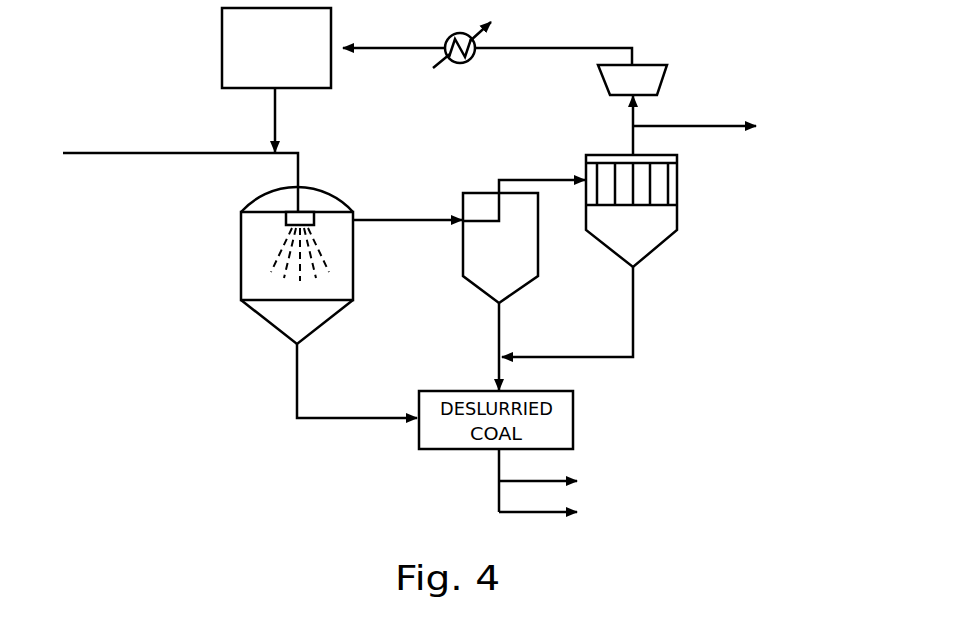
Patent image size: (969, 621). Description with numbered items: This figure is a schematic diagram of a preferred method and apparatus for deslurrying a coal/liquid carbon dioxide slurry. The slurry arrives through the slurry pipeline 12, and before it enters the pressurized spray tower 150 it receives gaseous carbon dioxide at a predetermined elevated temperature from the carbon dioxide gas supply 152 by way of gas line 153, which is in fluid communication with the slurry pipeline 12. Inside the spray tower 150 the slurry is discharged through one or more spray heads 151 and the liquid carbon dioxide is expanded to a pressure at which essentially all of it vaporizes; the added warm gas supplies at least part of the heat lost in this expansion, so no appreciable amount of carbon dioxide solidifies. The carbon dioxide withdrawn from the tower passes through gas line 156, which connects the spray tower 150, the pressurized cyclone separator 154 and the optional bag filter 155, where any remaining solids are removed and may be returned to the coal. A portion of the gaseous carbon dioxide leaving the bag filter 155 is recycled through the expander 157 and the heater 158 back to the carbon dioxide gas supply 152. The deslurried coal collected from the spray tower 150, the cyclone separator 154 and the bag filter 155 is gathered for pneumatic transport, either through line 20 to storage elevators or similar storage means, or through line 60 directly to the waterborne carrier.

The slurry pipeline 12 is at (153, 157).
The line 20 is at (540, 480).
The line 60 is at (540, 513).
The pressurized spray tower 150 is at (252, 275).
The spray heads 151 is at (286, 220).
The carbon dioxide gas supply 152 is at (228, 18).
The gas line 153 is at (276, 114).
The cyclone separator 154 is at (492, 275).
The bag filter 155 is at (647, 238).
The gas line 156 is at (409, 216).
The expander 157 is at (637, 78).
The heater 158 is at (453, 34).